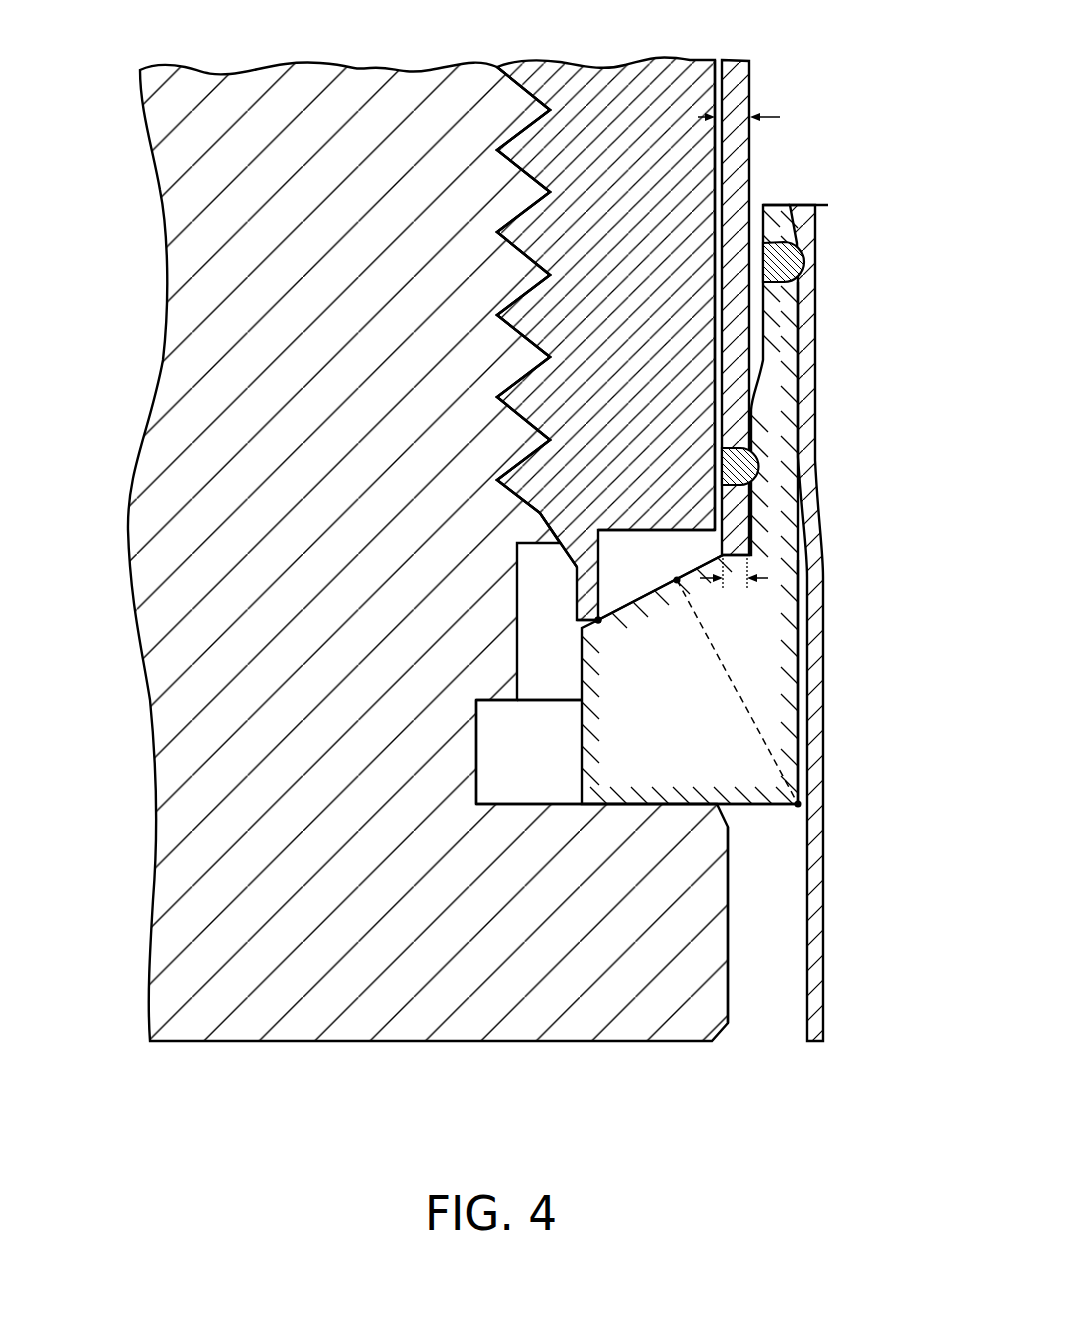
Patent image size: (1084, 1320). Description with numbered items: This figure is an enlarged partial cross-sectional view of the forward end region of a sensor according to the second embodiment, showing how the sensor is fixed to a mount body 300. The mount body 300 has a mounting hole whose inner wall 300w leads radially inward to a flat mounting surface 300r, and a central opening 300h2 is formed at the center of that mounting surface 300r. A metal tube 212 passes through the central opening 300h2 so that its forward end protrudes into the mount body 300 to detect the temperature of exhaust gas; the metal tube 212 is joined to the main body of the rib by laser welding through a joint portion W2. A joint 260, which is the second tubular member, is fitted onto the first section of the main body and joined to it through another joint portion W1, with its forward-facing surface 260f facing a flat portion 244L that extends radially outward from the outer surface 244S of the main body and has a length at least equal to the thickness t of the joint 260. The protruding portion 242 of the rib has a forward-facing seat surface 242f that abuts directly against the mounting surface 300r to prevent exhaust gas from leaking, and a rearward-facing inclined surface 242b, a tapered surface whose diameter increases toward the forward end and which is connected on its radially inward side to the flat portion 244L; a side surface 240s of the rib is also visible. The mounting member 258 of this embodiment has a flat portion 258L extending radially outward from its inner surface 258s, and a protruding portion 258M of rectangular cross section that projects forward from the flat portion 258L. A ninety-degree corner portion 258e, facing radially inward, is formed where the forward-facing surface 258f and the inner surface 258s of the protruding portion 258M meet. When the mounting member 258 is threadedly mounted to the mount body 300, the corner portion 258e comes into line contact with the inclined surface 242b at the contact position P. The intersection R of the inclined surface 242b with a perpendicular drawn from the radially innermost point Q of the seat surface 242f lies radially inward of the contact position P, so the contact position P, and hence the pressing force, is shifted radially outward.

The mount body 300 is at (326, 90).
The inner wall of the mounting hole 300w is at (477, 737).
The mounting surface 300r is at (513, 793).
The central opening 300h2 is at (771, 1003).
The mounting member 258 is at (637, 90).
The protruding portion 258M is at (603, 562).
The inner surface 258s is at (725, 308).
The flat portion 258L is at (662, 534).
The corner portion 258e is at (598, 620).
The forward-facing surface 258f is at (580, 624).
The joint 260 is at (752, 176).
The forward-facing surface of the second tubular member 260f is at (752, 556).
The thickness of the second tubular member t is at (739, 103).
The metal tube 212 is at (822, 948).
The side surface of cover member 240s is at (800, 636).
The protruding portion 242 is at (735, 750).
The inclined surface 242b is at (626, 600).
The forward-facing surface 242f is at (782, 815).
The outer surface 244S is at (731, 497).
The flat portion 244L is at (738, 579).
The joint portion W1 is at (758, 464).
The joint portion W2 is at (805, 265).
The contact position P is at (601, 616).
The intersection R is at (669, 566).
The radially innermost point Q is at (800, 820).